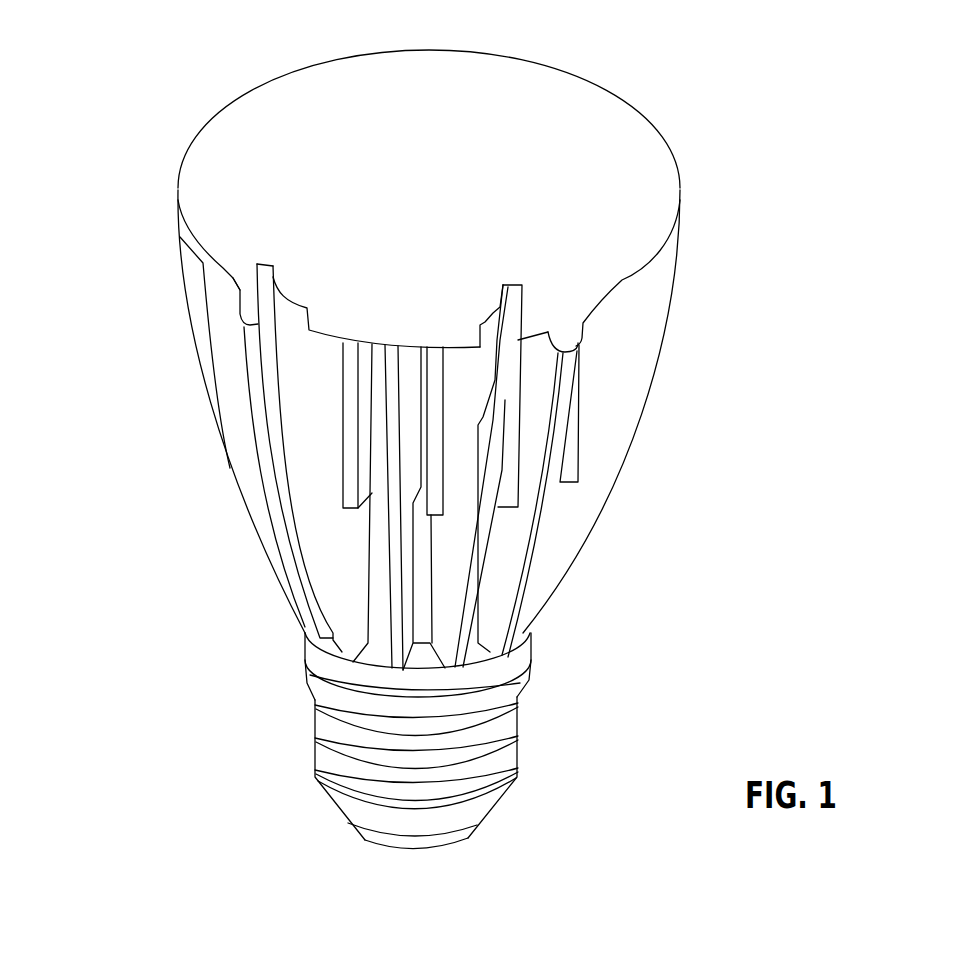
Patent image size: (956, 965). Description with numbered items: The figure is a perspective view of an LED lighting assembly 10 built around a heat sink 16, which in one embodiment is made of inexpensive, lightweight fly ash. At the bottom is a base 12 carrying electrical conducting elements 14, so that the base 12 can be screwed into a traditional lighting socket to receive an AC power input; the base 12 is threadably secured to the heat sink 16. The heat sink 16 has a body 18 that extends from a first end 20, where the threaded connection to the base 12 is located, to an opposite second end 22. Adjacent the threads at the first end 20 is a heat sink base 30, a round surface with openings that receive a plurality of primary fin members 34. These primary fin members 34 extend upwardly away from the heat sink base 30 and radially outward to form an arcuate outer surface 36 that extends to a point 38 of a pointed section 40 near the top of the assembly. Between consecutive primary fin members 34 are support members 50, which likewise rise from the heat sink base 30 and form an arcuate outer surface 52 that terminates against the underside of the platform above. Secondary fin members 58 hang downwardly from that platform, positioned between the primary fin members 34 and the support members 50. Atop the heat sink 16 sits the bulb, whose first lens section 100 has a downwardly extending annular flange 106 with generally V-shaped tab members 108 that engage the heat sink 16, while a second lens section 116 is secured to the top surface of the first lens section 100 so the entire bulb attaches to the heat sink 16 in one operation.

The LED lighting assembly 10 is at (146, 80).
The base 12 is at (510, 763).
The electrical conducting elements 14 is at (427, 850).
The heat sink 16 is at (665, 428).
The body 18 is at (677, 310).
The first end 20 is at (548, 683).
The second end 22 is at (688, 152).
The heat sink base 30 is at (515, 660).
The primary fin members 34 is at (320, 547).
The arcuate outer surface 36 is at (622, 483).
The point 38 is at (645, 248).
The pointed section 40 is at (662, 259).
The support members 50 is at (520, 568).
The arcuate outer surface 52 is at (545, 548).
The secondary fin members 58 is at (358, 432).
The first lens section 100 is at (663, 255).
The annular flange 106 is at (330, 327).
The tab member 108 is at (242, 313).
The second lens section 116 is at (548, 88).